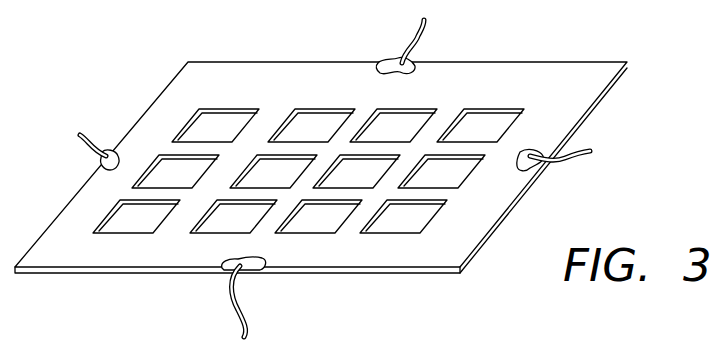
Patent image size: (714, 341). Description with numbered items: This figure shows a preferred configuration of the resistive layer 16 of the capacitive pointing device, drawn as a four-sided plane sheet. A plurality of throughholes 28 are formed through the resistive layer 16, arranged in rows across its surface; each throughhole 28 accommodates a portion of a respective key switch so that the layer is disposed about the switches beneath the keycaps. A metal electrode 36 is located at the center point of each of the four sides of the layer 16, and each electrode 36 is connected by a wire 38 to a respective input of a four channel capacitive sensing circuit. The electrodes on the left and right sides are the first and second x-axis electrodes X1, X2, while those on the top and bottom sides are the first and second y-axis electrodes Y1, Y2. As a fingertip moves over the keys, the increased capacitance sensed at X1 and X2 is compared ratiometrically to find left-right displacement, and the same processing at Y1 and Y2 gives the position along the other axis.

The resistive layer 16 is at (437, 253).
The throughholes 28 is at (487, 123).
The metal electrode 36 is at (334, 170).
The wire 38 is at (100, 160).
The first x-axis electrode X1 is at (70, 137).
The second x-axis electrode X2 is at (582, 149).
The first y-axis electrode Y1 is at (402, 33).
The second y-axis electrode Y2 is at (261, 301).